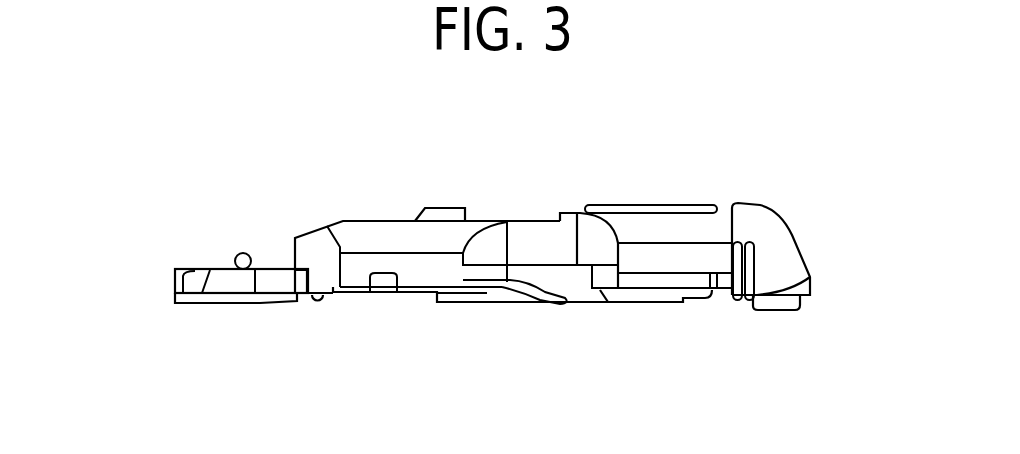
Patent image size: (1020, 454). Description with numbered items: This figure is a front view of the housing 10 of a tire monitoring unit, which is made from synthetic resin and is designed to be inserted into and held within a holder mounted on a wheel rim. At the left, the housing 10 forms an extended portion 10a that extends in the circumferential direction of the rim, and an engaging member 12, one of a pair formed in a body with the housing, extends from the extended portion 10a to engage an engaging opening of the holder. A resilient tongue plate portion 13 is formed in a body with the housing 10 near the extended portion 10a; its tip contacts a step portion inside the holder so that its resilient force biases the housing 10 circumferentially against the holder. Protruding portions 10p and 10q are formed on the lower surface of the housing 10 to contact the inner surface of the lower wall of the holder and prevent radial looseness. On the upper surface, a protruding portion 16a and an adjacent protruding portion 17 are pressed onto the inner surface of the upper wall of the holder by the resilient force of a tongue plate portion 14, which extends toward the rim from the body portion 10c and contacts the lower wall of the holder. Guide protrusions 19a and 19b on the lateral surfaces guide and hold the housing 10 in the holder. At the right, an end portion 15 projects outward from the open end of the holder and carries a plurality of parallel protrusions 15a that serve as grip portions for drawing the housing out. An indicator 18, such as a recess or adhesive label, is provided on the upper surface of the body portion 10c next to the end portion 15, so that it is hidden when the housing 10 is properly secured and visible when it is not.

The housing 10 is at (348, 211).
The extended portion 10a is at (175, 282).
The body portion 10c is at (407, 300).
The protruding portion 10p is at (268, 302).
The protruding portion 10q is at (780, 310).
The engaging member 12 is at (217, 287).
The tongue plate portion 13 is at (240, 253).
The tongue plate portion 14 is at (553, 304).
The end portion 15 is at (775, 258).
The protrusions 15a is at (737, 300).
The protruding portion 16a is at (440, 218).
The protruding portion 17 is at (638, 206).
The indicator 18 is at (723, 207).
The guide protrusion 19a is at (363, 300).
The guide protrusion 19b is at (727, 290).